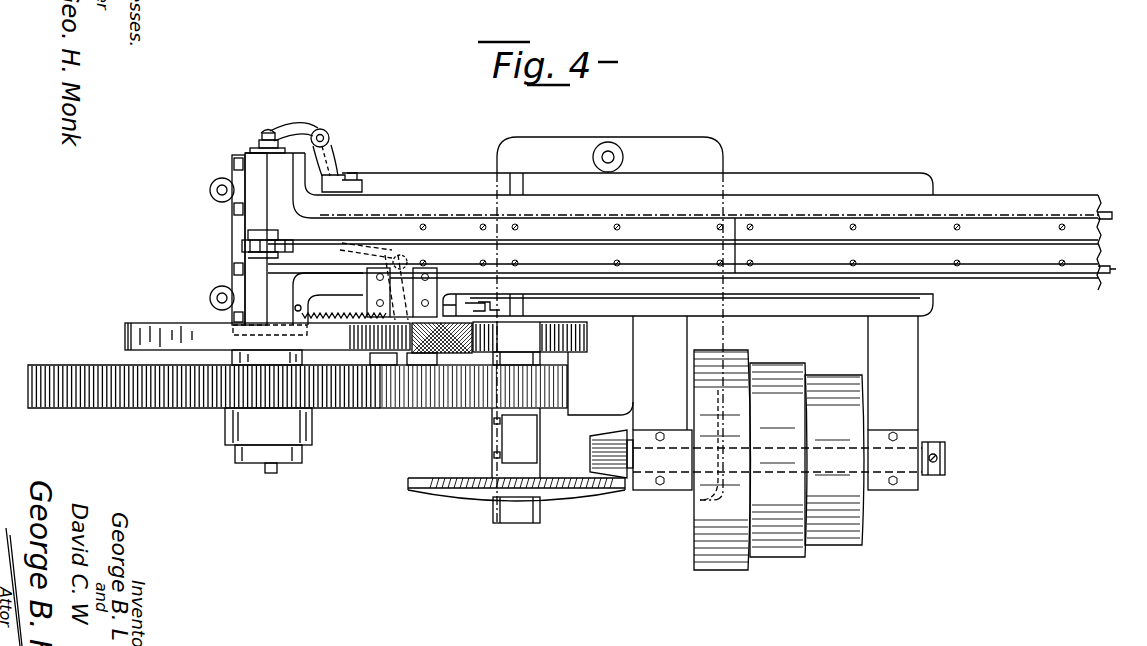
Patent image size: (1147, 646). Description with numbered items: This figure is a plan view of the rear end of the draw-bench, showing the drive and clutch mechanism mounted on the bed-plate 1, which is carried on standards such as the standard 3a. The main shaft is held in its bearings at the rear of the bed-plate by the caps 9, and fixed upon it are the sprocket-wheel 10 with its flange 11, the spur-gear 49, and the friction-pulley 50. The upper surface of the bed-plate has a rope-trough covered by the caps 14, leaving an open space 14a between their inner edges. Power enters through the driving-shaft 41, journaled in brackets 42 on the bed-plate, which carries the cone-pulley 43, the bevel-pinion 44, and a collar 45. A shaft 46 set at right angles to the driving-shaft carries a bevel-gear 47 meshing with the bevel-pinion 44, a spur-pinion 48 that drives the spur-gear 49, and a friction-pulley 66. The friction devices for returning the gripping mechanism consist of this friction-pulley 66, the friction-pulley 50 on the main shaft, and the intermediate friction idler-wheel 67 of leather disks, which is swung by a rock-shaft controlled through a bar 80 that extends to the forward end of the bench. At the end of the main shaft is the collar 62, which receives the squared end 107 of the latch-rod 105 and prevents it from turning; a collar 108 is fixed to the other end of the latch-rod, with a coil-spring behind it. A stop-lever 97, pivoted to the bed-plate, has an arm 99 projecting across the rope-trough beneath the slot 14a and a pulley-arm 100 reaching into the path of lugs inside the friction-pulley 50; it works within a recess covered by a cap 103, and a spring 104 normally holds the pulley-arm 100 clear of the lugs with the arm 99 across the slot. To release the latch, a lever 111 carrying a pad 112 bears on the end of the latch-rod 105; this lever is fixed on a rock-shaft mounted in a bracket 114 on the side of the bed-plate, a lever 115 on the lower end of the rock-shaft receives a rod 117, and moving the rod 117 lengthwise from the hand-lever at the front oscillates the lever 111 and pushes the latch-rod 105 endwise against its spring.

The bed-plate 1 is at (1036, 196).
The standard 3a is at (676, 140).
The cap 9 is at (226, 155).
The sprocket-wheel 10 is at (248, 236).
The flange 11 is at (242, 248).
The cap 14 is at (1100, 234).
The open space 14a is at (990, 242).
The driving-shaft 41 is at (946, 460).
The bracket 42 is at (680, 338).
The cone-pulley 43 is at (840, 547).
The bevel-pinion 44 is at (612, 488).
The collar 45 is at (933, 478).
The shaft 46 is at (540, 359).
The bevel-gear 47 is at (420, 492).
The spur-pinion 48 is at (567, 385).
The spur-gear 49 is at (85, 410).
The friction-pulley 50 is at (124, 337).
The collar 62 is at (232, 455).
The friction-pulley 66 is at (588, 338).
The friction idler-wheel 67 is at (447, 343).
The bar 80 is at (1116, 282).
The stop-lever 97 is at (370, 245).
The arm 99 is at (328, 243).
The pulley-arm 100 is at (366, 286).
The cap 103 is at (470, 288).
The spring 104 is at (350, 318).
The latch-rod 105 is at (261, 140).
The squared end 107 is at (266, 474).
The collar 108 is at (262, 143).
The lever 111 is at (303, 124).
The pad 112 is at (270, 131).
The bracket 114 is at (339, 157).
The lever 115 is at (331, 144).
The rod 117 is at (1105, 215).